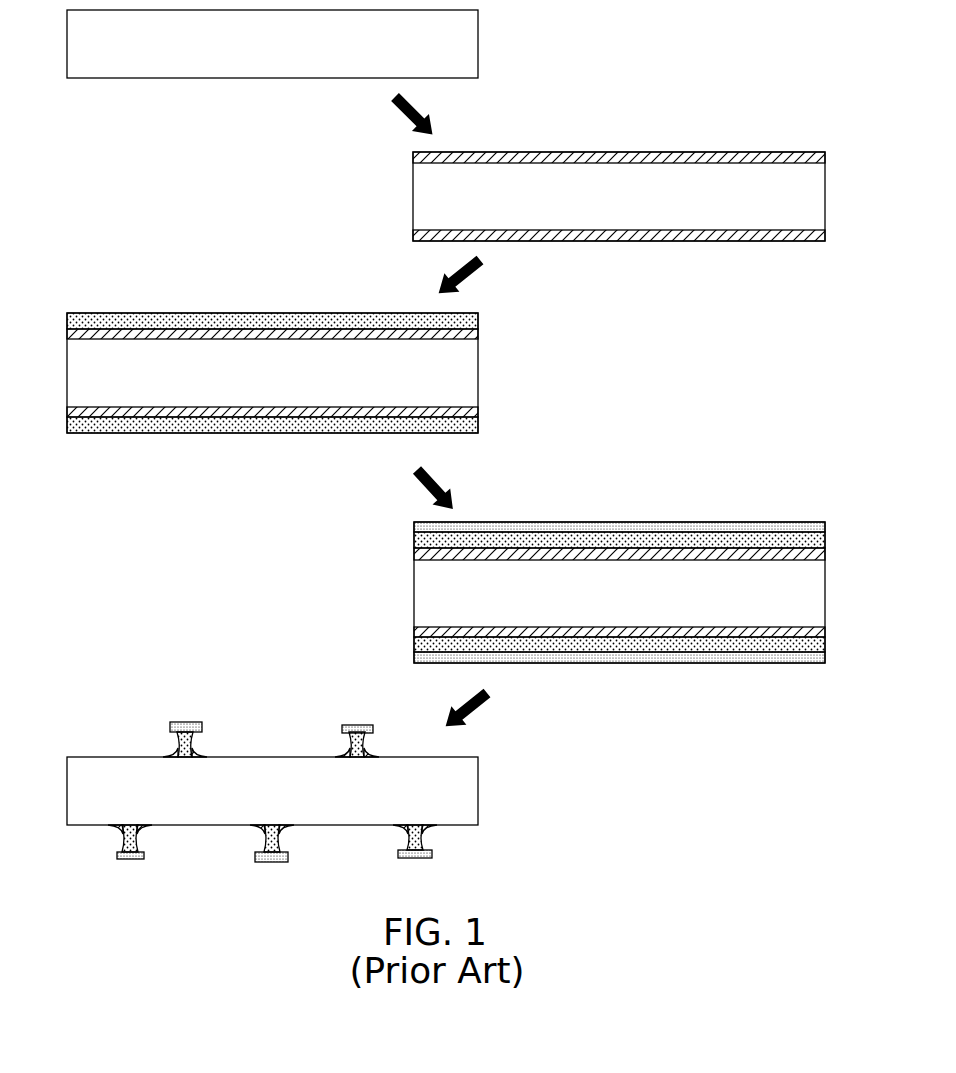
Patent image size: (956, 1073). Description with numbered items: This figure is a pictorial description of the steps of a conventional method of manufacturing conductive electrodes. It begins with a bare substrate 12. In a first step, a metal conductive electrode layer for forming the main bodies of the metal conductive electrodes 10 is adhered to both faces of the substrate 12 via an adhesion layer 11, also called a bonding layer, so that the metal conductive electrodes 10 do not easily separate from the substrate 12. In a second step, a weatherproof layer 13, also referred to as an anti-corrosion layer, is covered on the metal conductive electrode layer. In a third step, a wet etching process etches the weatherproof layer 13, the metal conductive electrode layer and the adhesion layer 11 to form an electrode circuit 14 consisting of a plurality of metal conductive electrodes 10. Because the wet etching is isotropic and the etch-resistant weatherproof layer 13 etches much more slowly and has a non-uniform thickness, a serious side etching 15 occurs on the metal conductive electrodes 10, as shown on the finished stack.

The metal conductive electrode 10 is at (160, 318).
The adhesion layer 11 is at (622, 158).
The substrate 12 is at (460, 50).
The weatherproof layer 13 is at (625, 528).
The electrode circuit 14 is at (272, 878).
The side etching 15 is at (448, 840).